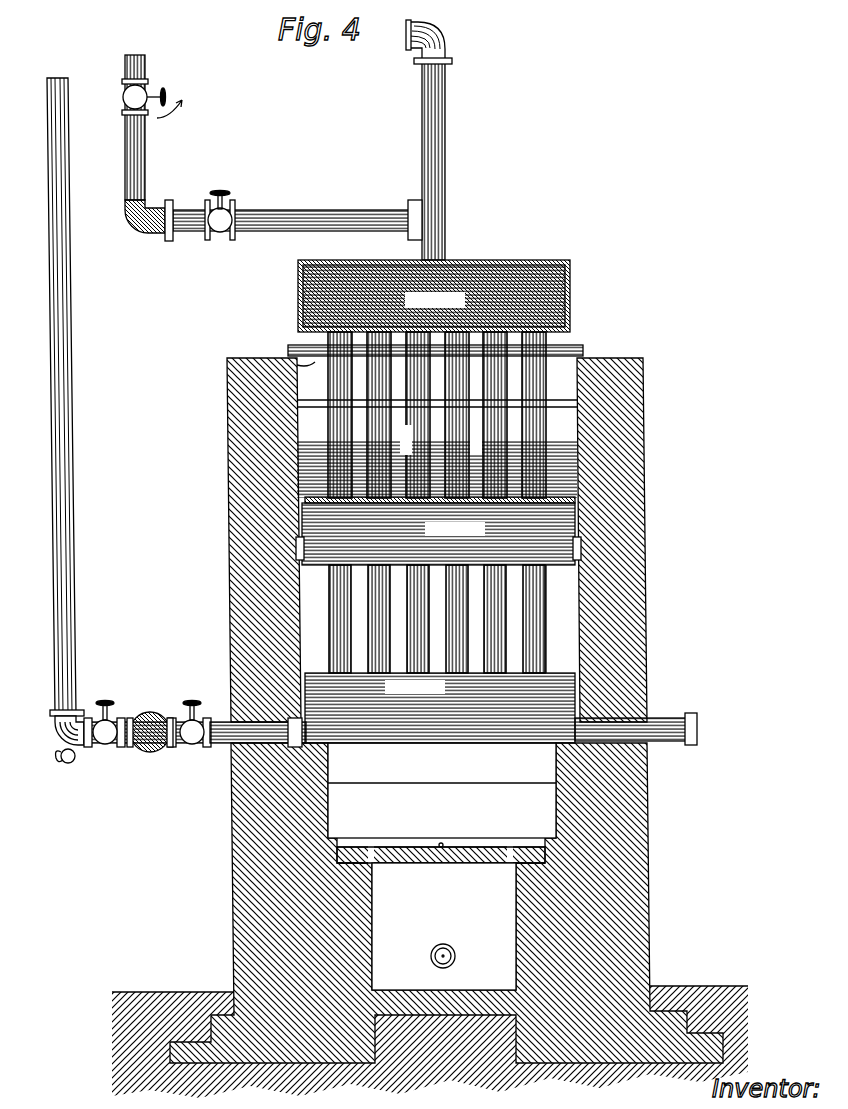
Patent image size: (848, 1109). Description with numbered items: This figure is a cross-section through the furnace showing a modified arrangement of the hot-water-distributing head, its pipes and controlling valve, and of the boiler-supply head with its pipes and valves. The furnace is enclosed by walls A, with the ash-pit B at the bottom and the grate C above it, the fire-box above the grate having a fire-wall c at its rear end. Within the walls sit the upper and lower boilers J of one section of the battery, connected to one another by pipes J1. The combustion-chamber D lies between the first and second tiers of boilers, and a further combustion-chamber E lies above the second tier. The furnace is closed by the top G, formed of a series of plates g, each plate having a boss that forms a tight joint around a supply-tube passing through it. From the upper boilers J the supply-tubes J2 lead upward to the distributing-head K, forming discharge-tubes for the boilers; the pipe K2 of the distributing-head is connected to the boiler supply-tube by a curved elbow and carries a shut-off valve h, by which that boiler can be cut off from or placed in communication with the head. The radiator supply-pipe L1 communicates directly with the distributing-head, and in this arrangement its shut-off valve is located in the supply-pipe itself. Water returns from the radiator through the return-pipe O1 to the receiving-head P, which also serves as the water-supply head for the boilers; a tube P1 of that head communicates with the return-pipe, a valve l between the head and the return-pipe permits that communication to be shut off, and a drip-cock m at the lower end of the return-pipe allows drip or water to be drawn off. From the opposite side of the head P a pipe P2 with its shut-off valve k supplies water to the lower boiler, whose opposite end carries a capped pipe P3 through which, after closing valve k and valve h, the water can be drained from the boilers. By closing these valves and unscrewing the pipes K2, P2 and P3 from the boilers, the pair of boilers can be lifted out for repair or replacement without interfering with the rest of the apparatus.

The walls of a furnace A is at (238, 640).
The ash-pit B is at (402, 914).
The grate C is at (441, 841).
The fire-wall c is at (442, 790).
The combustion-chamber D is at (553, 619).
The combustion-chamber E is at (437, 451).
The top G is at (567, 350).
The plates g is at (306, 372).
The upper and lower boilers J is at (438, 501).
The connecting pipes J1 is at (380, 392).
The supply-tubes J2 is at (445, 158).
The distributing-head K is at (110, 258).
The pipes K2 is at (312, 190).
The supply-pipe L1 is at (152, 127).
The return-pipe O1 is at (74, 411).
The receiving-head P is at (150, 712).
The tubes P1 is at (121, 746).
The pipes P2 is at (233, 746).
The pipe P3 is at (656, 724).
The shut-off valve h is at (220, 203).
The shut-off valve k is at (192, 708).
The valve l is at (105, 708).
The drip-cock m is at (63, 768).